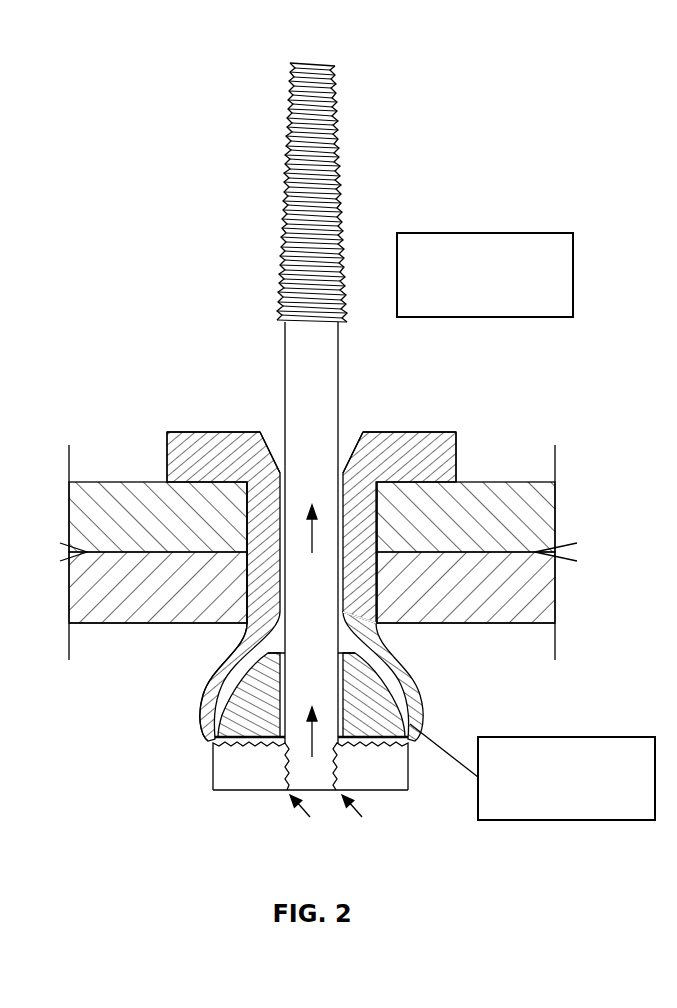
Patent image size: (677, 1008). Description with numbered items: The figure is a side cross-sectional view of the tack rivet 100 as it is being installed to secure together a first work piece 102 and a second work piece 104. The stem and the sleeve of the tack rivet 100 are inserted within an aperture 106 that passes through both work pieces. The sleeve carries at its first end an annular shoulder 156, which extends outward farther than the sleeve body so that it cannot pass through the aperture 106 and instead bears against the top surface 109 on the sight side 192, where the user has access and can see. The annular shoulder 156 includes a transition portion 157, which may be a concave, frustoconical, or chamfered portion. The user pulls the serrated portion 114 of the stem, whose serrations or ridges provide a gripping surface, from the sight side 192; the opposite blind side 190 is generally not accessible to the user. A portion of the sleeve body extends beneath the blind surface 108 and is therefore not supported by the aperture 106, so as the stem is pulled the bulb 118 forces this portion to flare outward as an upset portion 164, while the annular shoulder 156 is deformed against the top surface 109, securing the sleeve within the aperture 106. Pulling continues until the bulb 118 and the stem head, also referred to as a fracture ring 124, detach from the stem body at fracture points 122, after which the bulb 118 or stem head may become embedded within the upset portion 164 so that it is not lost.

The tack rivet 100 is at (197, 40).
The first work piece 102 is at (543, 513).
The second work piece 104 is at (545, 600).
The aperture 106 is at (245, 517).
The blind surface 108 is at (542, 621).
The top surface 109 is at (485, 480).
The serrated portion 114 is at (323, 145).
The bulb 118 is at (218, 720).
The fracture points 122 is at (285, 790).
The fracture ring 124 is at (376, 782).
The annular shoulder 156 is at (445, 453).
The transition portion 157 is at (340, 474).
The upset portion 164 is at (383, 707).
The blind side 190 is at (590, 808).
The sight side 192 is at (462, 305).